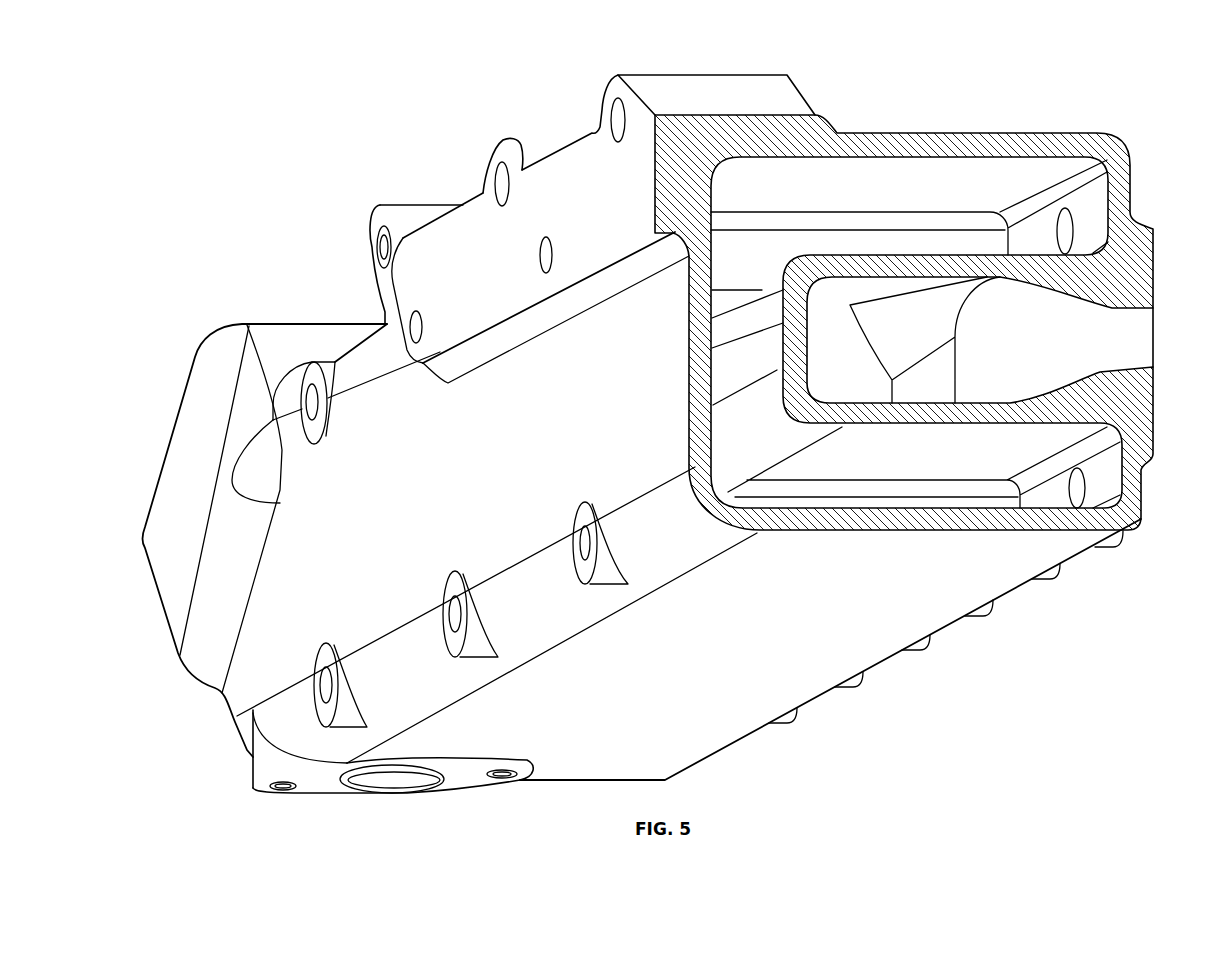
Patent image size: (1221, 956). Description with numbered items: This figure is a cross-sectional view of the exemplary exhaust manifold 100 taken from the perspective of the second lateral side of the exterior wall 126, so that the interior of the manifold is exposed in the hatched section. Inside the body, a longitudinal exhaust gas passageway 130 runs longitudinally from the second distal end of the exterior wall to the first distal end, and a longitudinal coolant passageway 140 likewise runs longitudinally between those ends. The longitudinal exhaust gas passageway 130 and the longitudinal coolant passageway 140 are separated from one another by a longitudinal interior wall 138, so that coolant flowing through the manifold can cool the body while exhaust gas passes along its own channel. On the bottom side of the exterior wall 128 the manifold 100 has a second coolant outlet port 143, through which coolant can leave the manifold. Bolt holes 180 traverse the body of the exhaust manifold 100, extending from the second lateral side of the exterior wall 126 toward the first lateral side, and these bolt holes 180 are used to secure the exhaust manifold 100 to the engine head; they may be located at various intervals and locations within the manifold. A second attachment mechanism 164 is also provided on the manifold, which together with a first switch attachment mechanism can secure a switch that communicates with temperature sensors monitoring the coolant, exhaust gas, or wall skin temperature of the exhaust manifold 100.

The exhaust manifold 100 is at (205, 135).
The second lateral side of the exterior wall 126 is at (382, 412).
The bottom side of the exterior wall 128 is at (782, 630).
The longitudinal exhaust gas passageway 130 is at (843, 317).
The longitudinal interior wall 138 is at (1000, 267).
The longitudinal coolant passageway 140 is at (938, 232).
The second coolant outlet port 143 is at (393, 778).
The second attachment mechanism 164 is at (470, 222).
The bolt holes 180 is at (377, 212).